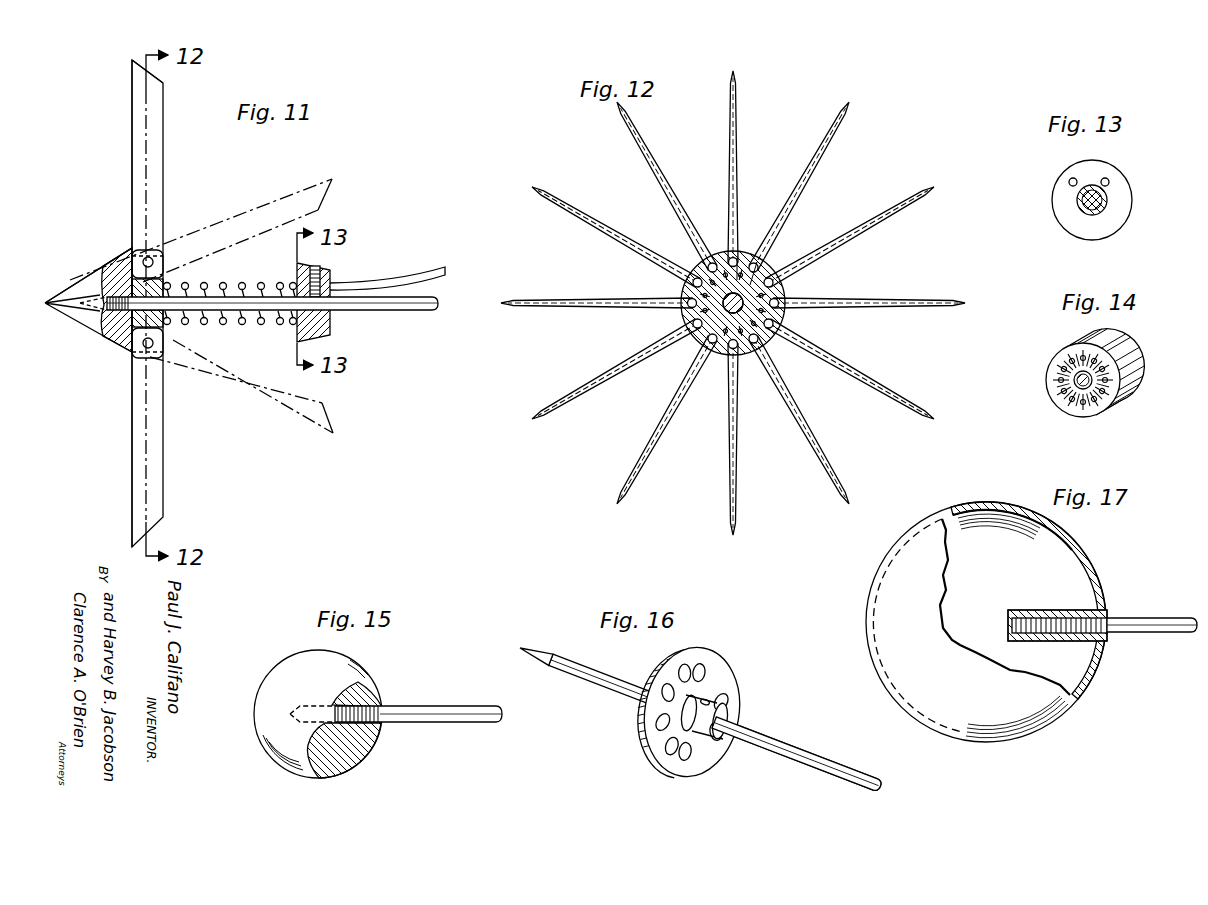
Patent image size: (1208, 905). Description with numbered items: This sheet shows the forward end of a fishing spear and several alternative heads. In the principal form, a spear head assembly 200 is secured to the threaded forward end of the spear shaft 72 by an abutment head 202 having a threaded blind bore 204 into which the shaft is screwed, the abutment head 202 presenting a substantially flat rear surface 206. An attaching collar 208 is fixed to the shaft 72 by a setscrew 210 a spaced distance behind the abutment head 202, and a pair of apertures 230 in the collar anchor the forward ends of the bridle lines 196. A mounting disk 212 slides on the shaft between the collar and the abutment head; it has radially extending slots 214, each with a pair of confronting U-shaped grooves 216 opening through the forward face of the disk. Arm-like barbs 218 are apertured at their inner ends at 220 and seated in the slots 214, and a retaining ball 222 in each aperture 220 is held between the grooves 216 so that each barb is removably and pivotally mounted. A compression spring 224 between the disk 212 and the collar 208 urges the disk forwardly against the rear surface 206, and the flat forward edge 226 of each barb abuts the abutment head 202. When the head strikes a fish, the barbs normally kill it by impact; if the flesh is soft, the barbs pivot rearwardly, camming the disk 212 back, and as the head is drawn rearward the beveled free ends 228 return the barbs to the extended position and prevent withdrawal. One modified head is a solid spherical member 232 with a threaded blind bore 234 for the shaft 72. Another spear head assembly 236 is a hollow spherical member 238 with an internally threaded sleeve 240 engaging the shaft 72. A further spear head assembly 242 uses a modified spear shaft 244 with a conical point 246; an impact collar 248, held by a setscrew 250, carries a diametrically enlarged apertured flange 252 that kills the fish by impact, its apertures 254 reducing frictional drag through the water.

In FIG. 11, the spear shaft 72 is at (418, 311).
In FIG. 12, the spear shaft 72 is at (724, 298).
In FIG. 15, the spear shaft 72 is at (450, 706).
In FIG. 17, the spear shaft 72 is at (1138, 617).
In FIG. 11, the bridle lines 196 is at (398, 272).
In FIG. 11, the spear head assembly 200 is at (114, 352).
In FIG. 11, the abutment head 202 is at (86, 280).
In FIG. 11, the threaded blind bore 204 is at (115, 262).
In FIG. 11, the rear surface 206 is at (131, 252).
In FIG. 11, the attaching collar 208 is at (332, 330).
In FIG. 13, the attaching collar 208 is at (1060, 231).
In FIG. 11, the setscrew 210 is at (318, 270).
In FIG. 11, the mounting disk 212 is at (165, 280).
In FIG. 12, the mounting disk 212 is at (733, 303).
In FIG. 14, the mounting disk 212 is at (1046, 394).
In FIG. 12, the radially extending slots 214 is at (775, 283).
In FIG. 14, the radially extending slots 214 is at (1068, 356).
In FIG. 12, the U-shaped grooves 216 is at (770, 334).
In FIG. 14, the U-shaped grooves 216 is at (1080, 417).
In FIG. 11, the arm-like barbs 218 is at (163, 178).
In FIG. 12, the arm-like barbs 218 is at (808, 175).
In FIG. 11, the aperture 220 is at (151, 349).
In FIG. 11, the retaining ball 222 is at (165, 337).
In FIG. 12, the retaining ball 222 is at (757, 260).
In FIG. 11, the compression spring 224 is at (238, 287).
In FIG. 11, the flat forward edge 226 is at (131, 163).
In FIG. 11, the beveled free ends 228 is at (165, 84).
In FIG. 13, the apertures 230 is at (1069, 182).
In FIG. 15, the spherical member 232 is at (368, 672).
In FIG. 15, the threaded blind bore 234 is at (375, 736).
In FIG. 17, the spear head assembly 236 is at (864, 628).
In FIG. 17, the hollow spherical member 238 is at (870, 586).
In FIG. 17, the internally threaded sleeve 240 is at (1058, 640).
In FIG. 16, the spear head assembly 242 is at (750, 709).
In FIG. 16, the spear shaft 244 is at (608, 692).
In FIG. 16, the conical point 246 is at (541, 652).
In FIG. 16, the impact collar 248 is at (648, 769).
In FIG. 16, the setscrew 250 is at (710, 700).
In FIG. 16, the apertured flange 252 is at (706, 654).
In FIG. 16, the apertures 254 is at (703, 754).